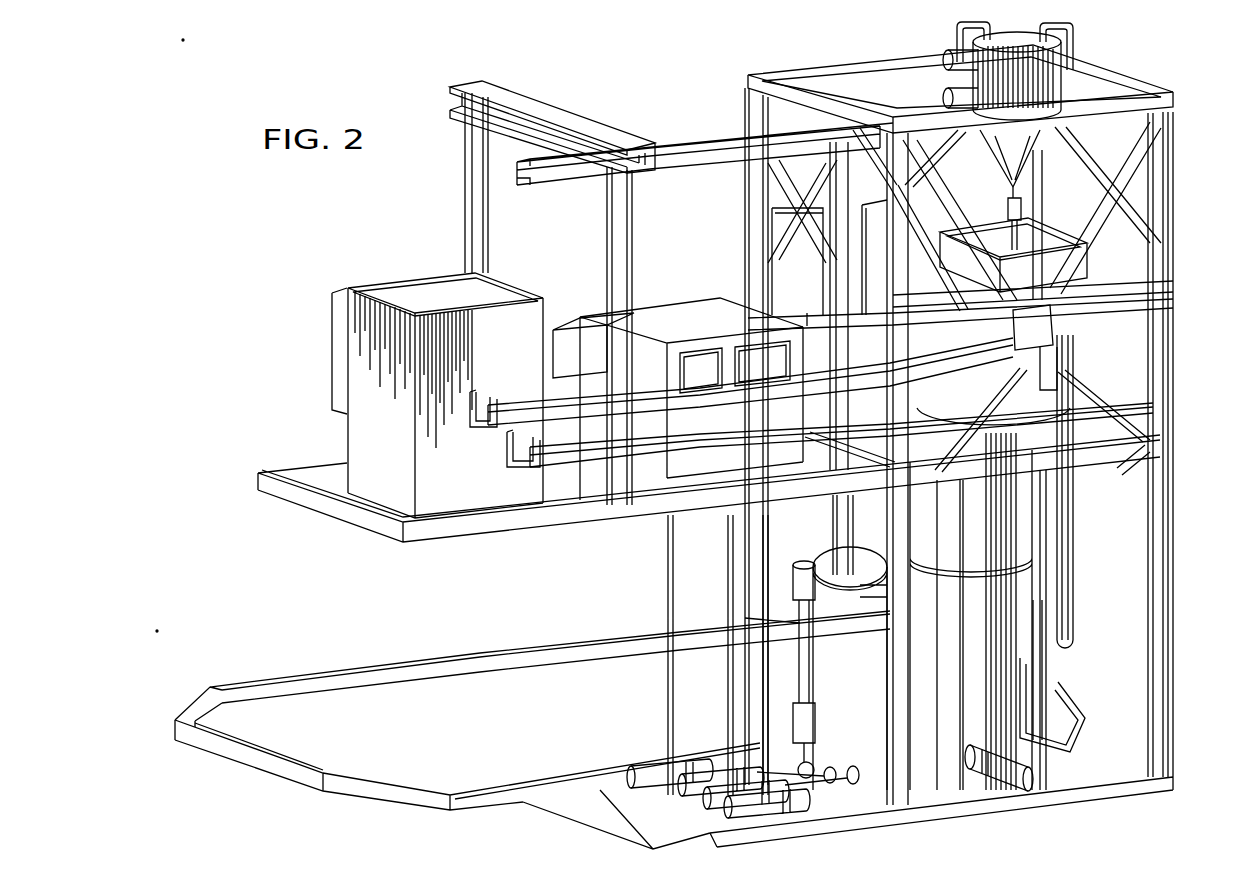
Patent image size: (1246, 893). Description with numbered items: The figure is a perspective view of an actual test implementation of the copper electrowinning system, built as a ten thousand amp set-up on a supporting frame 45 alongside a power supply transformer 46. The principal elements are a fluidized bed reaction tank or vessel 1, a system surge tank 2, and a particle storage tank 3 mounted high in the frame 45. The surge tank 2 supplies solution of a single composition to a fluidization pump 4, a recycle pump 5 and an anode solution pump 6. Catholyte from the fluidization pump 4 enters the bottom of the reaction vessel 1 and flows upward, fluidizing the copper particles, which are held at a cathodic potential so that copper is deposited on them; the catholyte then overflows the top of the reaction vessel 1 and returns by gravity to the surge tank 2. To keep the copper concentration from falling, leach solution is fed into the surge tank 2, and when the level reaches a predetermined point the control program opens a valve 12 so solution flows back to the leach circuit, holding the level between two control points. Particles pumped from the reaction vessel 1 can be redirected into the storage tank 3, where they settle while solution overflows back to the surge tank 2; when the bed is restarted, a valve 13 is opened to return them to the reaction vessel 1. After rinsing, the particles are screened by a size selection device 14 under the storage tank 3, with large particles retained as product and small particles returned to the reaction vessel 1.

The reaction tank or vessel 1 is at (1003, 527).
The system surge tank 2 is at (847, 682).
The particle storage tank 3 is at (1050, 73).
The fluidization pump 4 is at (757, 812).
The recycle pump 5 is at (1040, 790).
The anode solution pump 6 is at (710, 762).
The valve 12 is at (657, 770).
The valve 13 is at (1008, 208).
The screen or size selection device 14 is at (1060, 260).
The supporting frame 45 is at (1165, 545).
The power supply transformer 46 is at (358, 433).